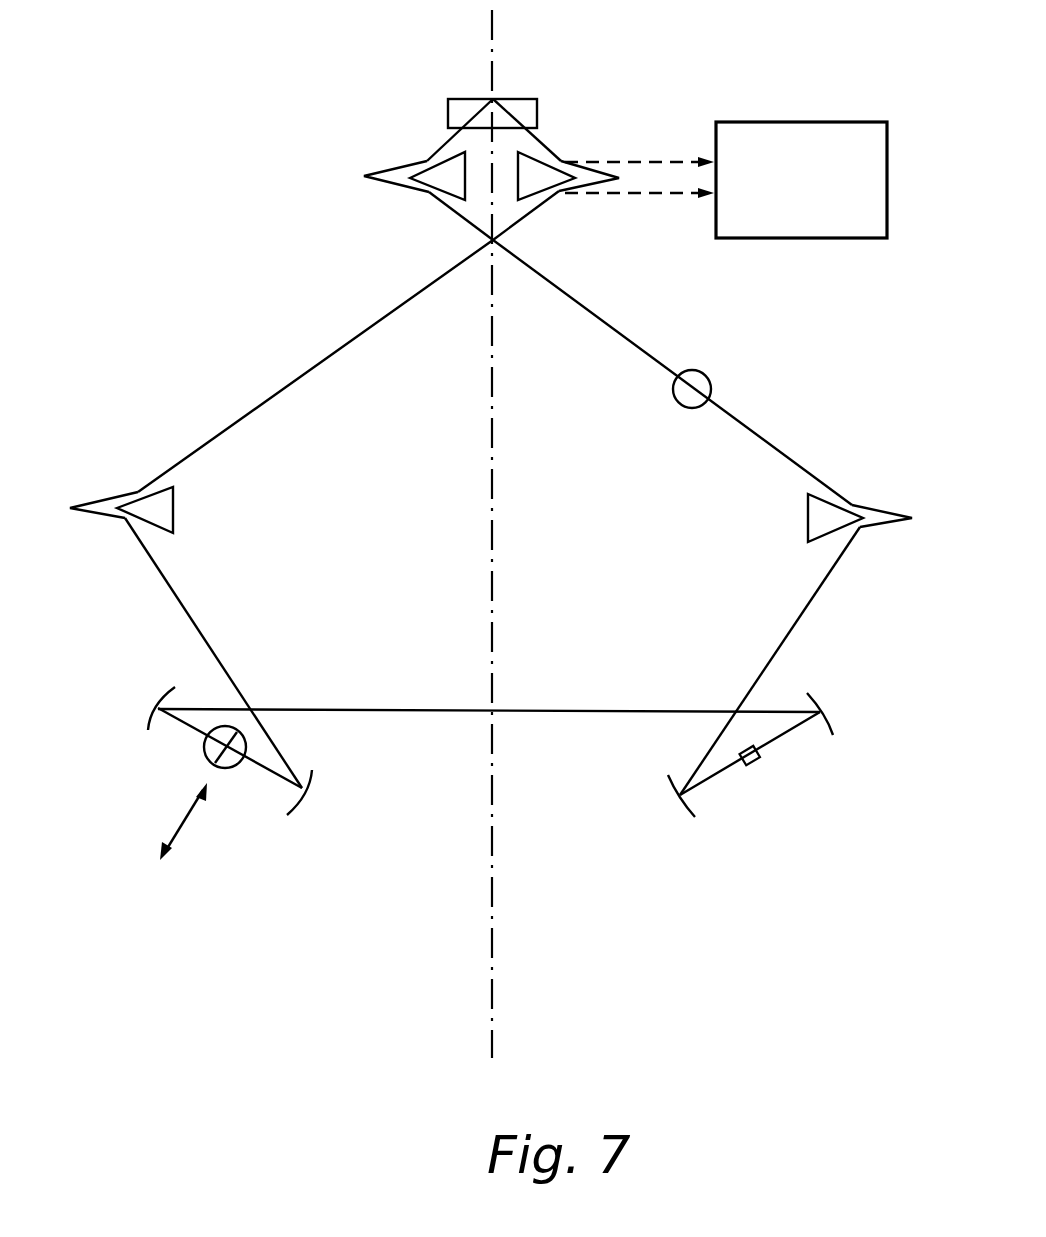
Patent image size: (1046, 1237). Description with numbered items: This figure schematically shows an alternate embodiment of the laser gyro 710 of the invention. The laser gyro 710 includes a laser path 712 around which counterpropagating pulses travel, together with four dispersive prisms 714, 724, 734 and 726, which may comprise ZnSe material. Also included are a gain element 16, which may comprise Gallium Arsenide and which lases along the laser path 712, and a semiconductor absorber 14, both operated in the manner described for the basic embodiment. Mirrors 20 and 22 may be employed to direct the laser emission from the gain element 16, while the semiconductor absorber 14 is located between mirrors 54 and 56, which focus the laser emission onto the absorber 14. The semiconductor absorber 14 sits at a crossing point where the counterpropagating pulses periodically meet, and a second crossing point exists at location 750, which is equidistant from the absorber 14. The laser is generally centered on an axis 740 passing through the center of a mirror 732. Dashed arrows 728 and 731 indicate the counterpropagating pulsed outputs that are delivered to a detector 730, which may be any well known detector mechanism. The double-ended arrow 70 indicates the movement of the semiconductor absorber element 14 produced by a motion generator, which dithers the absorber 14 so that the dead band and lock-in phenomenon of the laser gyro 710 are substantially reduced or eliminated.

The laser gyro 710 is at (264, 287).
The laser path 712 is at (305, 378).
The dispersive prism 714 is at (175, 508).
The dispersive prism 724 is at (883, 506).
The dispersive prism 726 is at (553, 152).
The dashed arrow 728 is at (662, 195).
The detector 730 is at (830, 122).
The dashed arrow 731 is at (667, 160).
The mirror 732 is at (525, 98).
The dispersive prism 734 is at (383, 163).
The axis 740 is at (492, 996).
The second crossing point 750 is at (710, 372).
The mirror 54 is at (170, 692).
The mirror 56 is at (307, 793).
The mirror 22 is at (835, 725).
The mirror 20 is at (670, 787).
The semiconductor absorber 14 is at (220, 770).
The gain element 16 is at (745, 765).
The double-ended arrow 70 is at (177, 817).